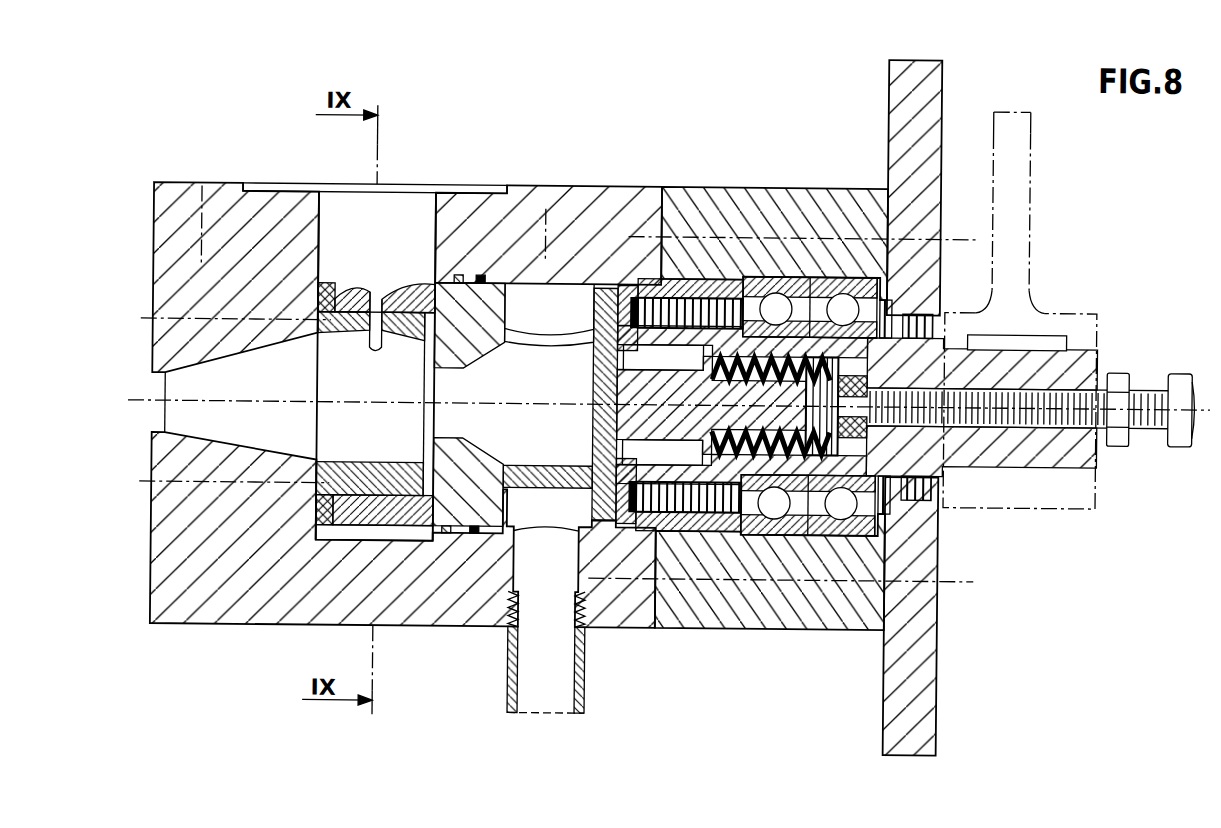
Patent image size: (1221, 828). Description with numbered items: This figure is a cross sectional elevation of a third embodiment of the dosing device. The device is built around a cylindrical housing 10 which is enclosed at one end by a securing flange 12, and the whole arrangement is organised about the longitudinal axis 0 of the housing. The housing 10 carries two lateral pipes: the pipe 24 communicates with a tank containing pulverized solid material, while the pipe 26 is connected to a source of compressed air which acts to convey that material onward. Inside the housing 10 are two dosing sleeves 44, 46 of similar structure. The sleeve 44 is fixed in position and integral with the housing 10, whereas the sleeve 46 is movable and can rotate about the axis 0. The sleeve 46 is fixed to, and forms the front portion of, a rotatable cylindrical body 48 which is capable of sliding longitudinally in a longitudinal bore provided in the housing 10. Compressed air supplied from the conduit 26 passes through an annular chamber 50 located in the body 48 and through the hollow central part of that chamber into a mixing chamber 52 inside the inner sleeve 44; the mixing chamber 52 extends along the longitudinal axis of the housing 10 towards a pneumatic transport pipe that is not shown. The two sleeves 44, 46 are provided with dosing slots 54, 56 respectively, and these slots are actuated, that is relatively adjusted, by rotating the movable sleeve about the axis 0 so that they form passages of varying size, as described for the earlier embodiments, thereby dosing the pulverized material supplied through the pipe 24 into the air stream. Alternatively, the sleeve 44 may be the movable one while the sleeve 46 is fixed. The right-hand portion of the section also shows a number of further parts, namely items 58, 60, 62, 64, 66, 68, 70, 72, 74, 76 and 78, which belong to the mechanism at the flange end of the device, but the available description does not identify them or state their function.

The longitudinal axis O 0 is at (129, 396).
The housing 10 is at (213, 189).
The securing flange 12 is at (930, 83).
The lateral pipe 24 is at (415, 222).
The lateral pipe 26 is at (560, 562).
The dosing sleeve 44 is at (333, 333).
The dosing sleeve 46 is at (350, 279).
The rotatable cylindrical body 48 is at (483, 452).
The annular chamber 50 is at (530, 292).
The mixing chamber 52 is at (385, 444).
The dosing slot 54 is at (385, 338).
The dosing slot 56 is at (380, 294).
The retaining ring 58 is at (325, 279).
The sleeve 60 is at (730, 291).
The adjusting nut 62 is at (997, 445).
The ball bearing 64 is at (775, 288).
The threaded sleeve 66 is at (675, 292).
The ring 68 is at (657, 292).
The key 70 is at (1031, 261).
The adjusting screw 72 is at (1153, 421).
The lock nut 74 is at (1107, 371).
The threaded bushing 76 is at (933, 305).
The cap 78 is at (609, 286).